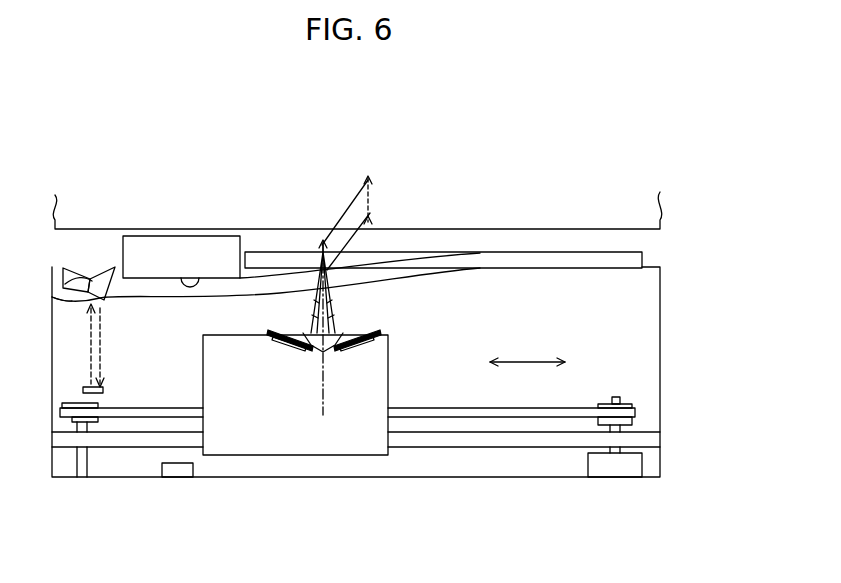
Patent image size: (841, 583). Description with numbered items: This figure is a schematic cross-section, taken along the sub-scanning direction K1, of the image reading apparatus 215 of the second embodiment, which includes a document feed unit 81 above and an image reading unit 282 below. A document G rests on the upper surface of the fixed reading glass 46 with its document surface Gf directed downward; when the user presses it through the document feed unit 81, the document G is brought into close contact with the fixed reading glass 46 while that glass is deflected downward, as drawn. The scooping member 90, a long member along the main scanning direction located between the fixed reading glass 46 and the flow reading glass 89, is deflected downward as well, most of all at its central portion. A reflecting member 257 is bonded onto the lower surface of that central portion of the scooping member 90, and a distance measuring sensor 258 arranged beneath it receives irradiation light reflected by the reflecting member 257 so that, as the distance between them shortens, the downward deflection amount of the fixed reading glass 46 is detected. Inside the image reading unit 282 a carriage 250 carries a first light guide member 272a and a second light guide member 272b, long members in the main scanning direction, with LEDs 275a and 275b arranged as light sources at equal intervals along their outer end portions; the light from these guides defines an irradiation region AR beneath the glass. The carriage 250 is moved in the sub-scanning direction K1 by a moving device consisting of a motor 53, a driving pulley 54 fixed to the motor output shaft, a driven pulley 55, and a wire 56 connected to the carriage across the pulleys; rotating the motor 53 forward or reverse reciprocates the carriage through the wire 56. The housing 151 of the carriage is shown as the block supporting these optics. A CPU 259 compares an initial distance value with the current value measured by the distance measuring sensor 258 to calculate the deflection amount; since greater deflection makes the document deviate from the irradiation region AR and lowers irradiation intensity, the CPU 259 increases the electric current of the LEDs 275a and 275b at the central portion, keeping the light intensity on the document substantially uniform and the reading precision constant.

The document feed unit 81 is at (669, 212).
The image reading unit 282 is at (668, 283).
The image reading apparatus 215 is at (730, 208).
The fixed reading glass 46 is at (594, 263).
The document surface Gf is at (198, 276).
The document G is at (241, 242).
The flow reading glass 89 is at (67, 268).
The scooping member 90 is at (72, 278).
The reflecting member 257 is at (52, 297).
The distance measuring sensor 258 is at (83, 390).
The driven pulley 55 is at (92, 405).
The wire 56 is at (527, 412).
The driving pulley 54 is at (613, 396).
The motor 53 is at (610, 470).
The CPU 259 is at (177, 470).
The head unit housing 151 is at (384, 389).
The carriage 250 is at (403, 366).
The LED 275a is at (268, 333).
The LED 275b is at (382, 332).
The first light guide member 272a is at (290, 332).
The second light guide member 272b is at (353, 332).
The irradiation region AR is at (361, 223).
The sub-scanning direction K1 is at (527, 352).